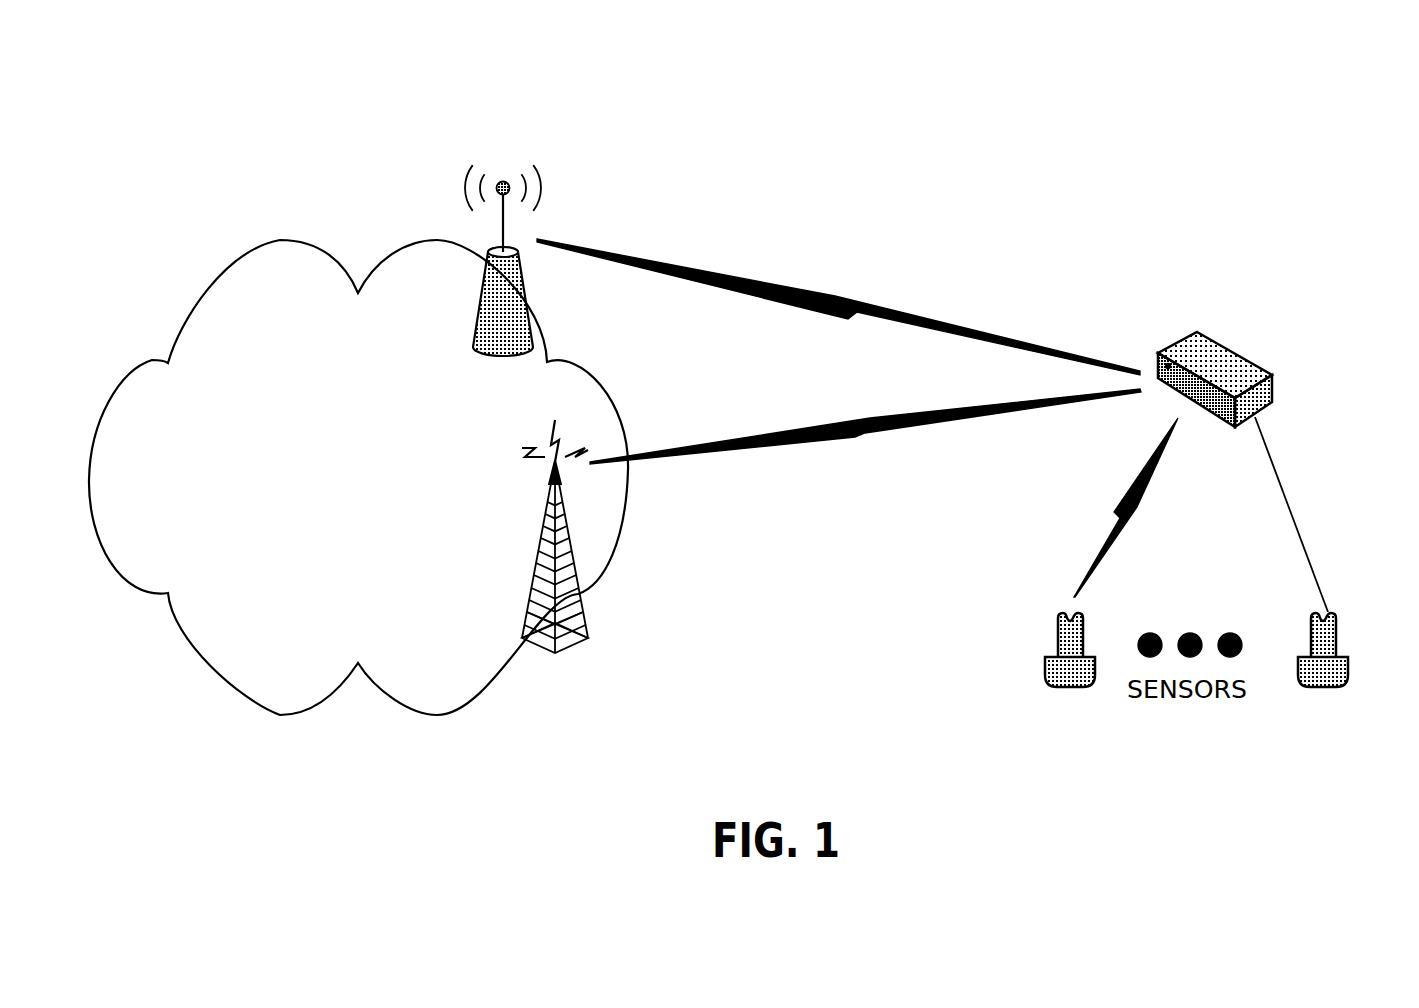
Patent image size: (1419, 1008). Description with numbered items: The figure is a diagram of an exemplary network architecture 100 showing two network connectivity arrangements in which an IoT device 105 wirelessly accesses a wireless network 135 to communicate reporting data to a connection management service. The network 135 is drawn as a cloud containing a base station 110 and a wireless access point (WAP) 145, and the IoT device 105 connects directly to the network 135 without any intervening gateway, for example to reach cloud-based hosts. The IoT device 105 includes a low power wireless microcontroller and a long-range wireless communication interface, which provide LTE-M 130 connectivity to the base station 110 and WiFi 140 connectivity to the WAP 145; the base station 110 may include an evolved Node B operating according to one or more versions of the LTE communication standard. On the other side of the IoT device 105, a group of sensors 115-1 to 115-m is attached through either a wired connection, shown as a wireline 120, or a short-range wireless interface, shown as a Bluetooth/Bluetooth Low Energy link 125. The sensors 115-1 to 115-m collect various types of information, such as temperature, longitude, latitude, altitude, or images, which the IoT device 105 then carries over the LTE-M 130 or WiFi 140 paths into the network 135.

The environment 100 is at (217, 132).
The IoT device 105 is at (1273, 390).
The base station 110 is at (530, 596).
The sensor 115-1 is at (1068, 688).
The sensor 115-m is at (1321, 688).
The wireline 120 is at (1302, 533).
The Bluetooth/Bluetooth Low Energy 125 is at (1157, 452).
The LTE-M 130 is at (924, 422).
The wireless network 135 is at (357, 629).
The WiFi 140 is at (880, 312).
The wireless access point (WAP) 145 is at (476, 328).